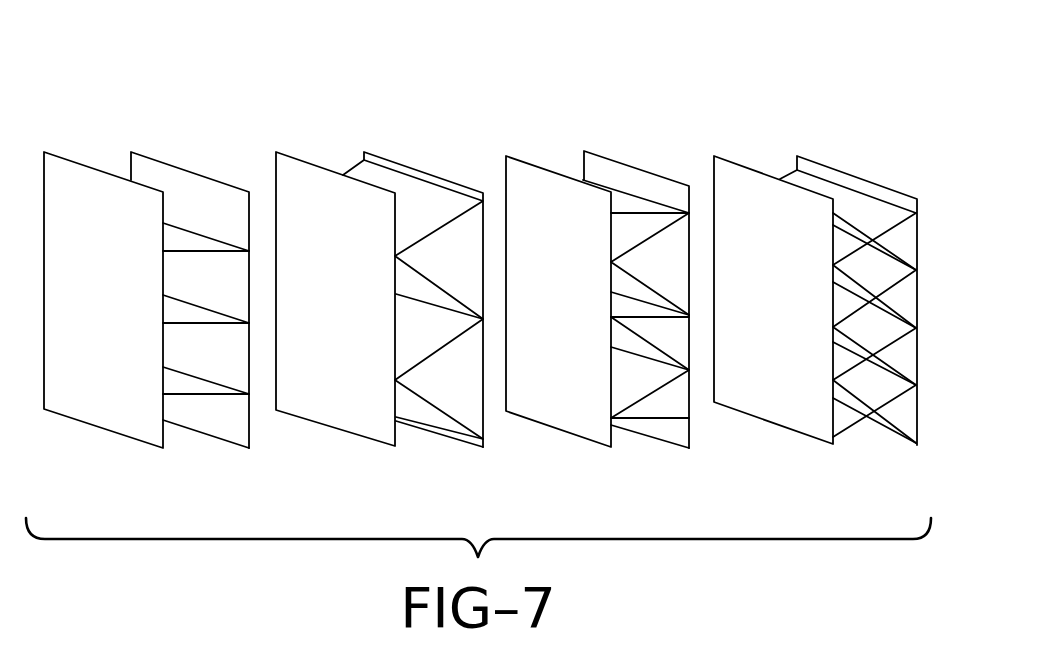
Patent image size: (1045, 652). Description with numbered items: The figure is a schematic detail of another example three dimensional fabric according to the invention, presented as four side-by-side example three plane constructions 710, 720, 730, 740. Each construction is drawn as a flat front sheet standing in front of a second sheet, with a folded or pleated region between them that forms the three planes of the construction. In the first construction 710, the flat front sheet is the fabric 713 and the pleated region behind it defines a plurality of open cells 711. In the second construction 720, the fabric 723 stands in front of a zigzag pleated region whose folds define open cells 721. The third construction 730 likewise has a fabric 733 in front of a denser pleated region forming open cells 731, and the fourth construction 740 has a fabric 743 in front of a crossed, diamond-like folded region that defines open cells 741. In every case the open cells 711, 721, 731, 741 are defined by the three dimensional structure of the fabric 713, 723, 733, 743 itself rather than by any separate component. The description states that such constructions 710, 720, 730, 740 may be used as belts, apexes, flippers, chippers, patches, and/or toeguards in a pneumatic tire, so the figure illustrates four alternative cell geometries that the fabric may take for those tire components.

The three plane construction 710 is at (146, 268).
The open cells 711 is at (208, 354).
The fabric 713 is at (129, 271).
The three plane construction 720 is at (379, 266).
The open cells 721 is at (457, 378).
The fabric 723 is at (361, 271).
The three plane construction 730 is at (597, 265).
The open cells 731 is at (622, 380).
The fabric 733 is at (592, 273).
The three plane construction 740 is at (814, 265).
The open cells 741 is at (868, 327).
The fabric 743 is at (799, 273).